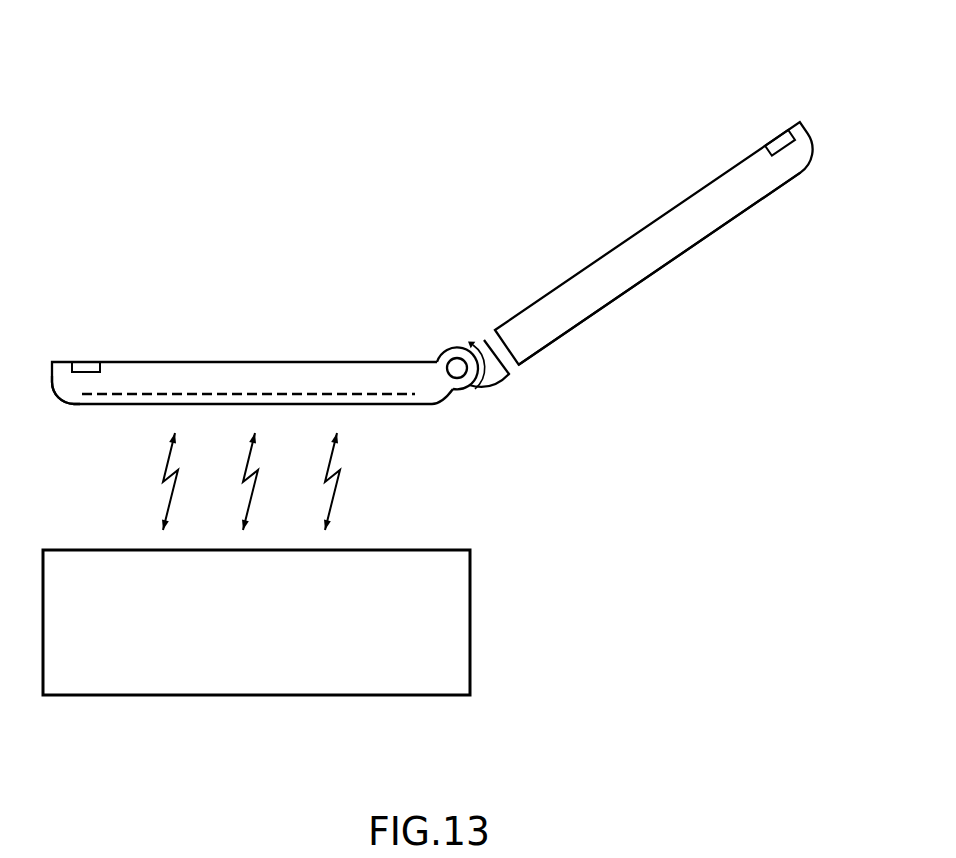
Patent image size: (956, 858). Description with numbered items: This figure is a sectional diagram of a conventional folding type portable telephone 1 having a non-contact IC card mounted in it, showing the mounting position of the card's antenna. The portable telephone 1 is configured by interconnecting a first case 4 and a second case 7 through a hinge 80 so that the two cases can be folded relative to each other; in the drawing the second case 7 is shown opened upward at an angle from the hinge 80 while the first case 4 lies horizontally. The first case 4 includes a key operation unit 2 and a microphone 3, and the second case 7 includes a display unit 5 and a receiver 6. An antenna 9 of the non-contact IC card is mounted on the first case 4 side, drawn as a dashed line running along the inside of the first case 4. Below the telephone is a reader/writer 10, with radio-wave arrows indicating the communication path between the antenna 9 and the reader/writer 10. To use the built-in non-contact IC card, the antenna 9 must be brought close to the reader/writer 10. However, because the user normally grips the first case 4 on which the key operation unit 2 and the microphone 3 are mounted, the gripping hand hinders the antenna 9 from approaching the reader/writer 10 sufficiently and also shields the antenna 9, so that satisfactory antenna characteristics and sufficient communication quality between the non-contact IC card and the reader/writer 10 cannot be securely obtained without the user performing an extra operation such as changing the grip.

The portable telephone 1 is at (758, 58).
The key operation unit 2 is at (203, 362).
The microphone 3 is at (87, 366).
The first case 4 is at (73, 383).
The display unit 5 is at (627, 240).
The receiver 6 is at (772, 143).
The second case 7 is at (727, 226).
The antenna 9 is at (329, 392).
The reader/writer 10 is at (470, 596).
The hinge 80 is at (455, 372).